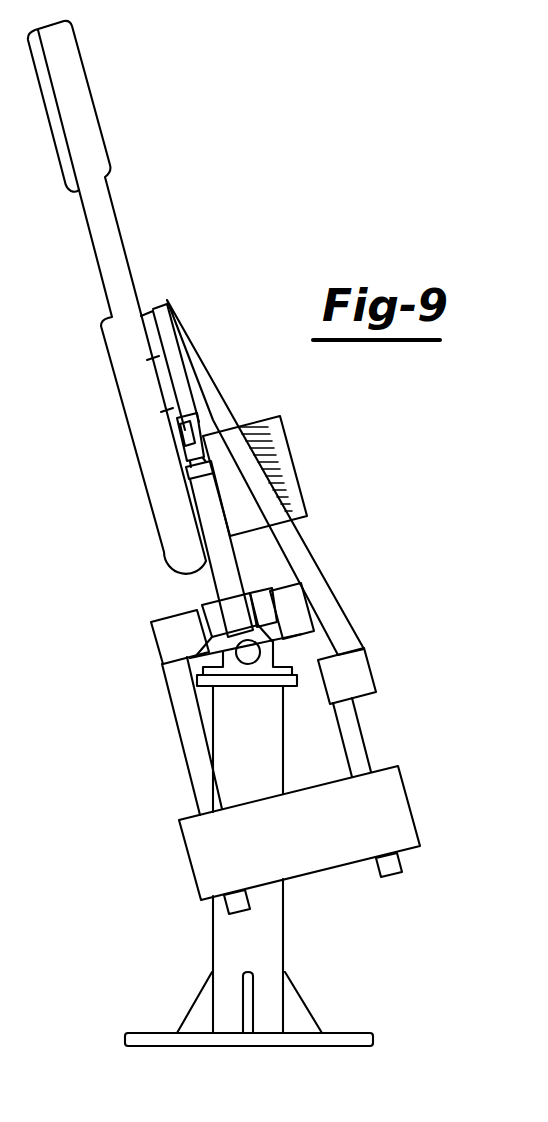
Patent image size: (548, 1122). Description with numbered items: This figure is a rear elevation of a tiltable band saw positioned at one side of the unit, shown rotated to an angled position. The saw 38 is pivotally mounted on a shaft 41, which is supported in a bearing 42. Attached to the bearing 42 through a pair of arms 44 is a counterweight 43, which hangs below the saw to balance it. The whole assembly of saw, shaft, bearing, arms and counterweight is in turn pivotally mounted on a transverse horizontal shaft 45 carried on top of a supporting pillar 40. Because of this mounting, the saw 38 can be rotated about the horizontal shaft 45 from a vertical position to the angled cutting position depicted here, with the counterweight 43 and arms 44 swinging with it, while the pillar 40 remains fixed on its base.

The saw 38 is at (123, 240).
The supporting pillar 40 is at (284, 753).
The shaft 41 is at (208, 634).
The bearing 42 is at (168, 622).
The counterweight 43 is at (312, 845).
The arms 44 is at (363, 735).
The transverse horizontal shaft 45 is at (248, 657).